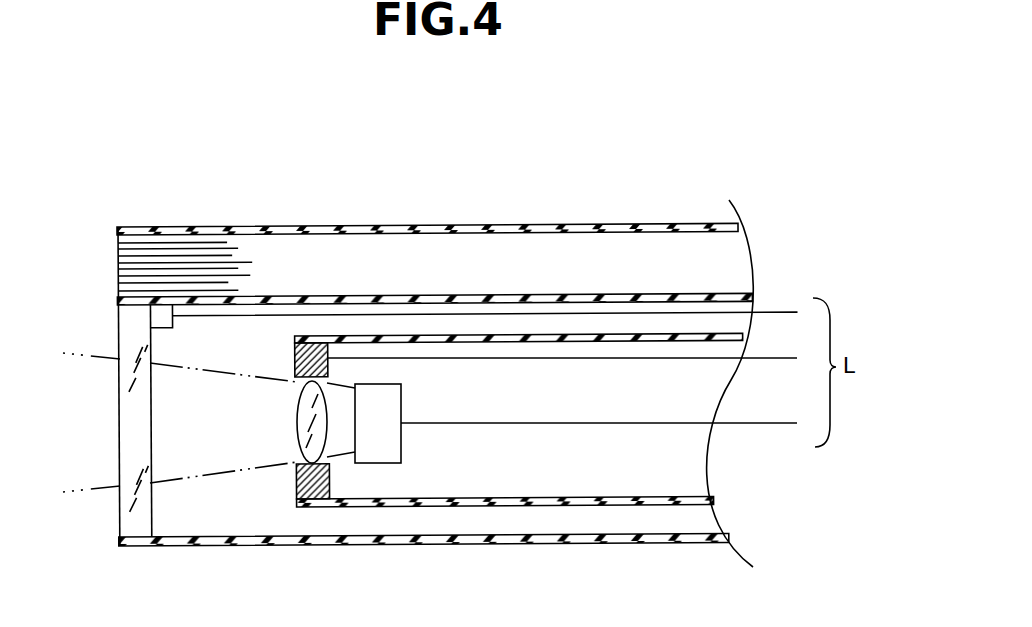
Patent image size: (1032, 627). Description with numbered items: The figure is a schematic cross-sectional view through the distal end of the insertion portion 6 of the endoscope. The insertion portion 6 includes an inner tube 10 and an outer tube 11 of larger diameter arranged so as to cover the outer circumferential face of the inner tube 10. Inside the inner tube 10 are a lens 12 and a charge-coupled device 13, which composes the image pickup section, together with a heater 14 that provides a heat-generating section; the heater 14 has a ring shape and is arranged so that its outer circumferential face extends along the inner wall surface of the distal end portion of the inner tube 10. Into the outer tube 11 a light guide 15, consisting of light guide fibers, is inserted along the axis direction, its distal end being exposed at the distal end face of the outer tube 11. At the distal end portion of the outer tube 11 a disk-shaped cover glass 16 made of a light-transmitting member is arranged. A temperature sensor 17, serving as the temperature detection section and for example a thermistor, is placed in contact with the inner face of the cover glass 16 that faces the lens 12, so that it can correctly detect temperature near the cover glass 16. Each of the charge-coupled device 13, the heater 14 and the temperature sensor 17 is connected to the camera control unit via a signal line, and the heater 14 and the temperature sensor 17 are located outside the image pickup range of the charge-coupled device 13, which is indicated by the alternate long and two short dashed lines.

The insertion portion 6 is at (440, 128).
The inner tube 10 is at (573, 506).
The outer tube 11 is at (345, 227).
The lens 12 is at (297, 420).
The charge-coupled device 13 is at (388, 412).
The heater 14 is at (294, 358).
The light guide 15 is at (118, 263).
The cover glass 16 is at (120, 428).
The temperature sensor 17 is at (165, 318).